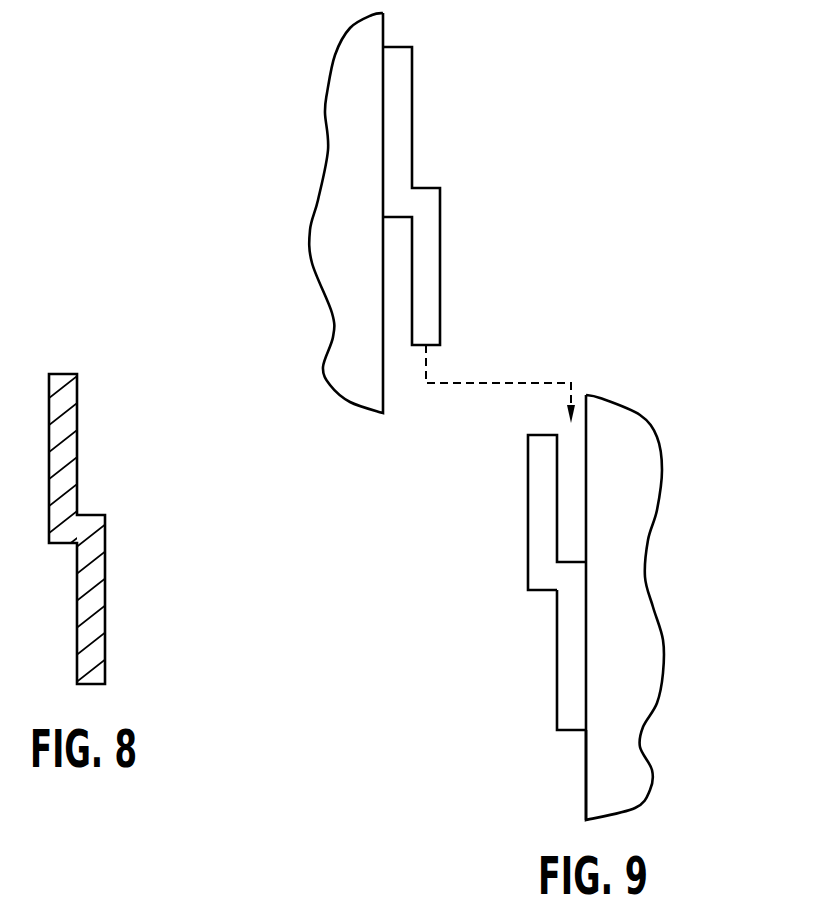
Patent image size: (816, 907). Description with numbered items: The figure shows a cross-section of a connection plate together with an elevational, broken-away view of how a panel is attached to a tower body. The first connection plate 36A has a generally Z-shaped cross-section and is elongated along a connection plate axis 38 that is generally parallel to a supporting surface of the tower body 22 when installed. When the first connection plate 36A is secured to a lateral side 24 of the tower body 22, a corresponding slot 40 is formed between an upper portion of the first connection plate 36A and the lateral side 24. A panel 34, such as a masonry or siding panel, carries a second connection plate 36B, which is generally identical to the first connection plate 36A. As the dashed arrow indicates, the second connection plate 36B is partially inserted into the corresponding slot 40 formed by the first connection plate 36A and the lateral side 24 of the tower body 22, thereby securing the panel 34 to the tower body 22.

The tower body 22 is at (618, 568).
The lateral side 24 is at (582, 770).
The panel 34 is at (352, 157).
The first connection plate 36A is at (555, 647).
The second connection plate 36B is at (399, 126).
The connection plate axis 38 is at (322, 897).
The corresponding slot 40 is at (572, 497).